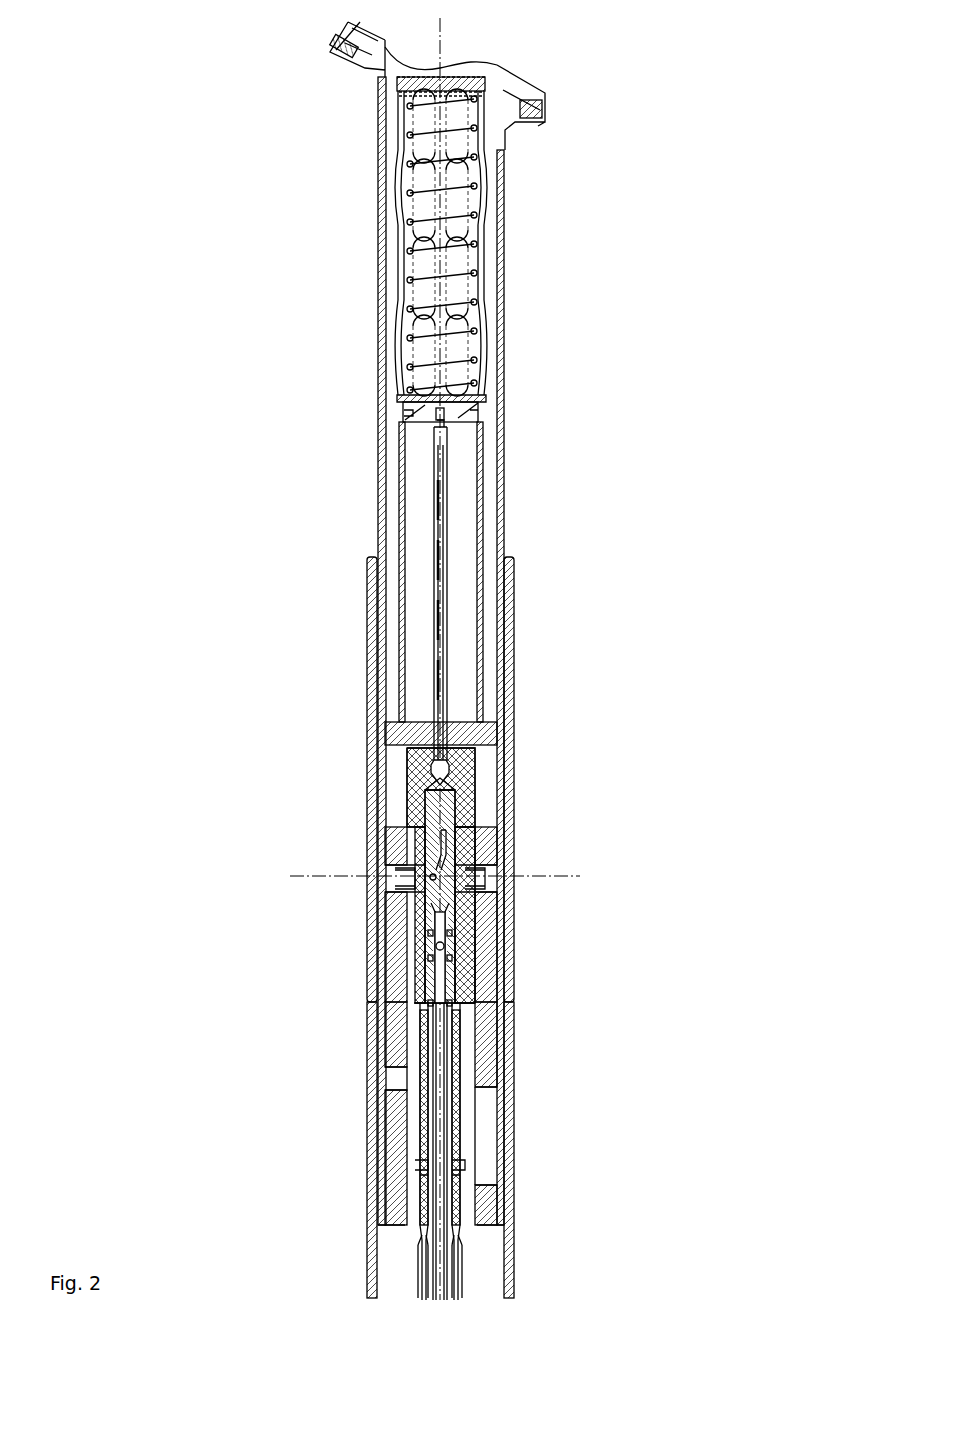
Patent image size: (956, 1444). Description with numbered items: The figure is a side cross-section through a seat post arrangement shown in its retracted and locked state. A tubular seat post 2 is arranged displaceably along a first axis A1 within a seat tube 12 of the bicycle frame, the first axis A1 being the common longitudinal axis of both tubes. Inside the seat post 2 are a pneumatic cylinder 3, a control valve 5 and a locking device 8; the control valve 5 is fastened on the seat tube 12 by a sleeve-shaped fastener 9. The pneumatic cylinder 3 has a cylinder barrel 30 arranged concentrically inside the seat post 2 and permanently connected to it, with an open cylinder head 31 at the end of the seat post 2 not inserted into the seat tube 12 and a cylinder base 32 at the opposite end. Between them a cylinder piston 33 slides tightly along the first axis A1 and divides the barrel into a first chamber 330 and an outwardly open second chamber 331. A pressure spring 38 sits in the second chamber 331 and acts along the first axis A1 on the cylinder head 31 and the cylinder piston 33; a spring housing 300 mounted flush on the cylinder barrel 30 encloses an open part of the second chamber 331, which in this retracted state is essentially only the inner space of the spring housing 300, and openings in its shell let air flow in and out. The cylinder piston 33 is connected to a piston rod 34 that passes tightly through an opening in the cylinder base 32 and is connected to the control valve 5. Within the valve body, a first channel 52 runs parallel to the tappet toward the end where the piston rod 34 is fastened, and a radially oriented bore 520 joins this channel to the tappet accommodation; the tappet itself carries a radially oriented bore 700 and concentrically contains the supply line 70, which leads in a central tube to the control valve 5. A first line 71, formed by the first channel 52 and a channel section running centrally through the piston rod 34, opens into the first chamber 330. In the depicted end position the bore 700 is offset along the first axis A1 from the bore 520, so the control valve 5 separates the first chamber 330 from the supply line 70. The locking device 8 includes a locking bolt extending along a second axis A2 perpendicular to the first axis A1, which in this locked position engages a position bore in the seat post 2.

The seat post 2 is at (192, 121).
The pneumatic cylinder 3 is at (148, 358).
The control valve 5 is at (148, 1057).
The locking device 8 is at (148, 876).
The fastener 9 is at (462, 1260).
The seat tube 12 is at (512, 1046).
The cylinder barrel 30 is at (480, 466).
The cylinder head 31 is at (602, 70).
The cylinder base 32 is at (582, 708).
The cylinder piston 33 is at (484, 412).
The piston rod 34 is at (447, 560).
The pressure spring 38 is at (474, 237).
The first channel 52 is at (413, 805).
The supply line 70 is at (446, 1140).
The first line 71 is at (436, 445).
The spring housing 300 is at (480, 308).
The first chamber 330 is at (470, 632).
The second chamber 331 is at (472, 160).
The radially oriented bore 520 is at (425, 1000).
The radially oriented bore 700 is at (447, 946).
The first axis A1 is at (455, 32).
The second axis A2 is at (580, 876).